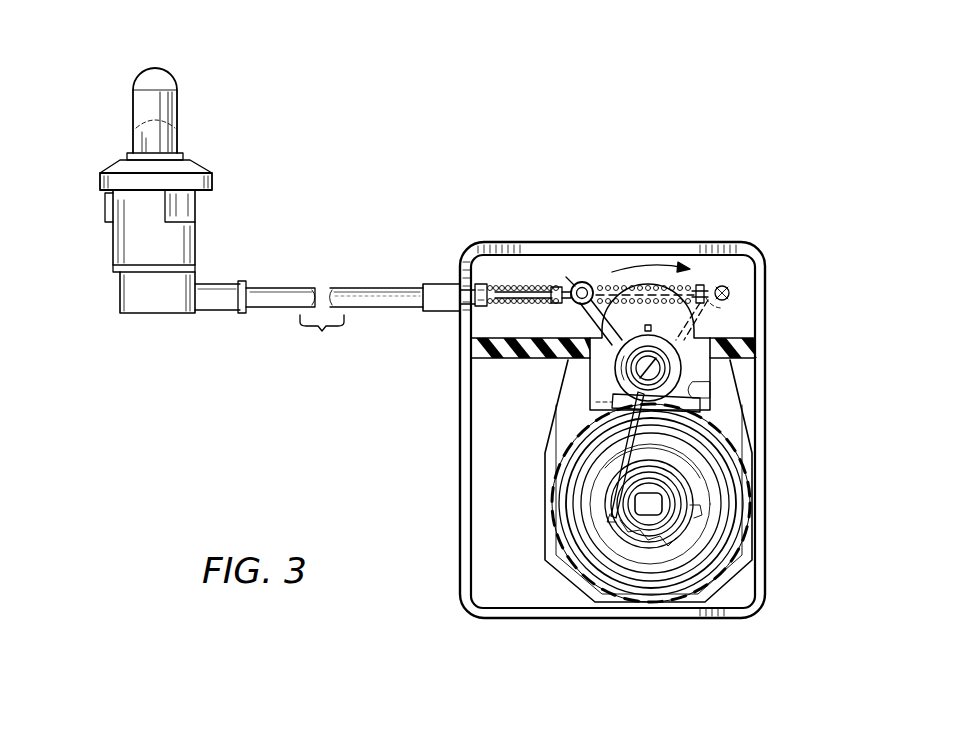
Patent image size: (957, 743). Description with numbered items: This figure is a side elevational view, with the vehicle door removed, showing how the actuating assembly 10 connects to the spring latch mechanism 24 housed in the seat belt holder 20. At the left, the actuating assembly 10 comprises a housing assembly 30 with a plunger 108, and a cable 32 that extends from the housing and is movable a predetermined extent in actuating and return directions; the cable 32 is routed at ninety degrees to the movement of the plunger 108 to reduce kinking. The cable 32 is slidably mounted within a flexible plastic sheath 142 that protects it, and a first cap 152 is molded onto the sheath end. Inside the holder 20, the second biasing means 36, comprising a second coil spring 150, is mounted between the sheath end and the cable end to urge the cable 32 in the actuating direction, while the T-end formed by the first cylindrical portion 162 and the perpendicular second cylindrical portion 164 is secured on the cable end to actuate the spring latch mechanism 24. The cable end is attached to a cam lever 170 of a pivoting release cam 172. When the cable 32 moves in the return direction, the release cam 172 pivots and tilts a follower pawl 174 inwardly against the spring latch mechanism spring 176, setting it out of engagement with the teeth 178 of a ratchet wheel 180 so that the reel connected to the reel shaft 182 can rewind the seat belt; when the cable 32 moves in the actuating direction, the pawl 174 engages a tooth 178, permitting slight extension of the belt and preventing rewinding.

The actuating assembly 10 is at (262, 157).
The housing assembly 30 is at (82, 187).
The plunger 108 is at (197, 140).
The cable 32 is at (321, 294).
The flexible plastic sheath 142 is at (355, 295).
The first cap 152 is at (443, 284).
The holder 20 is at (462, 342).
The second biasing means 36 is at (510, 286).
The second coil spring 150 is at (542, 286).
The cam lever 170 is at (590, 283).
The first cylindrical portion 162 is at (706, 288).
The second cylindrical portion 164 is at (735, 289).
The spring latch mechanism 24 is at (738, 379).
The spring latch mechanism spring 176 is at (632, 370).
The pivoting release cam 172 is at (626, 404).
The follower pawl 174 is at (612, 500).
The reel shaft 182 is at (660, 500).
The teeth 178 is at (692, 508).
The ratchet wheel 180 is at (684, 528).